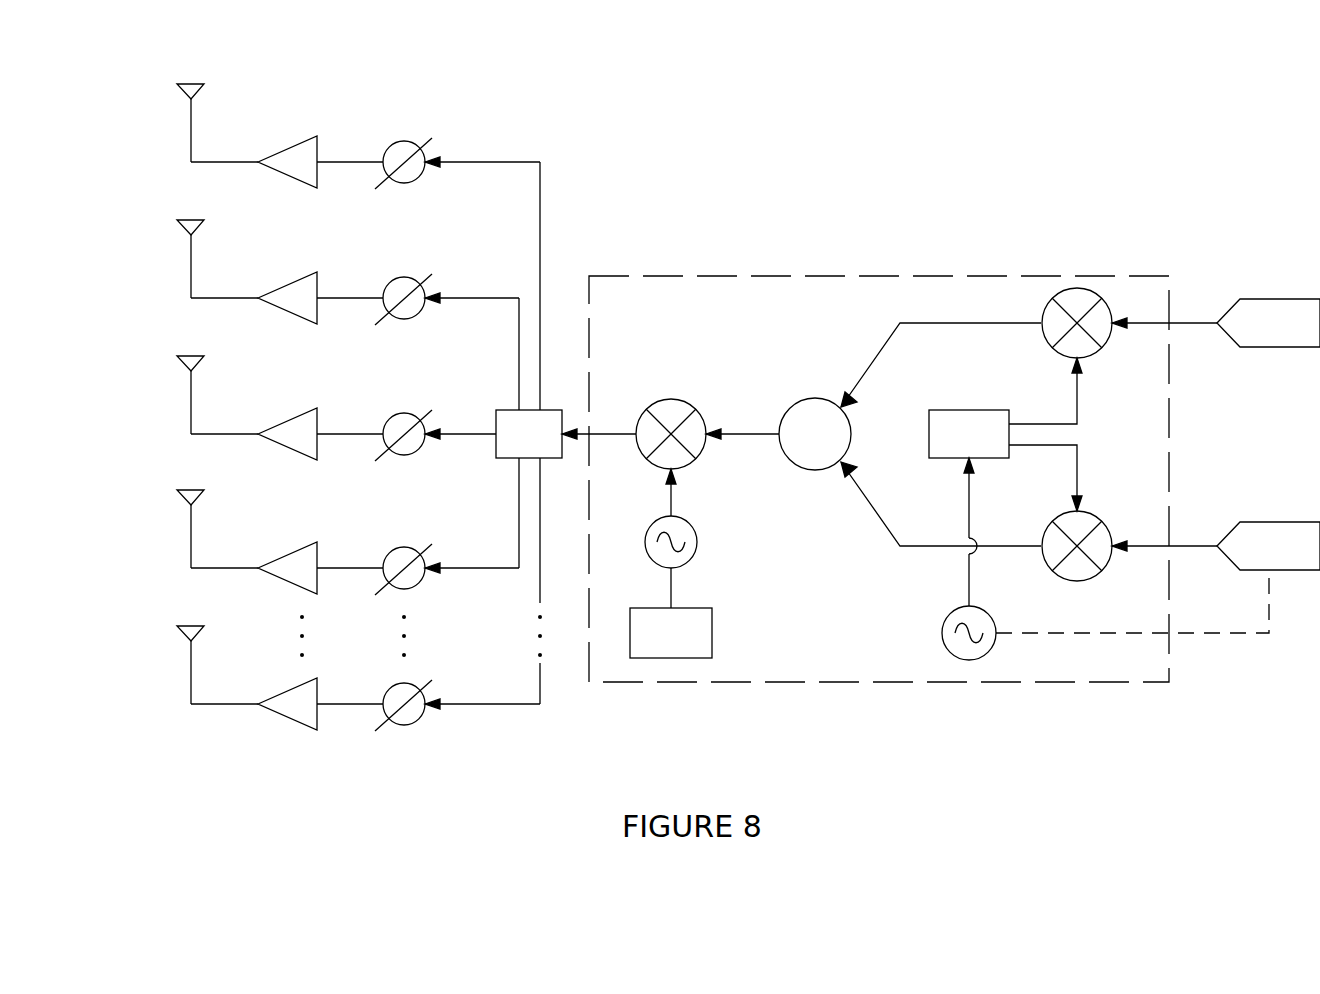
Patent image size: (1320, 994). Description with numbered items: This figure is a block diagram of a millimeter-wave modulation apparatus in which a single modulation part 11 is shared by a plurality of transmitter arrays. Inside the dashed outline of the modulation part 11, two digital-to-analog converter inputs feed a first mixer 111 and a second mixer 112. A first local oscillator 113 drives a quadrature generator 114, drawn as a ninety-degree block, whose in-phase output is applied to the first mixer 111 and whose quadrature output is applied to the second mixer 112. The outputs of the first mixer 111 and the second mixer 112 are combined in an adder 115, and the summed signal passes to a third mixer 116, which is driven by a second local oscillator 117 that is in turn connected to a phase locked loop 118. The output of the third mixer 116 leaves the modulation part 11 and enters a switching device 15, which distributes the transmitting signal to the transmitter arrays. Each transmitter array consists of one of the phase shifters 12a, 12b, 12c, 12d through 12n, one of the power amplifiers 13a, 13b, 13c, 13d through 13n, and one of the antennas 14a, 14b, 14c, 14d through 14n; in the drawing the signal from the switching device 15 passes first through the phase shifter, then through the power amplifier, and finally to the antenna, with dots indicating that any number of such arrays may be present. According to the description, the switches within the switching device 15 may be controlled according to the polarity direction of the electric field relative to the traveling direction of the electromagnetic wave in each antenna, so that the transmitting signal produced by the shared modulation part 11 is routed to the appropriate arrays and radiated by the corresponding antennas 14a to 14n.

The modulation part 11 is at (940, 276).
The phase shifter 12a is at (402, 142).
The phase shifter 12b is at (402, 278).
The phase shifter 12c is at (402, 414).
The phase shifter 12d is at (402, 548).
The phase shifter 12n is at (403, 725).
The power amplifier 13a is at (290, 148).
The power amplifier 13b is at (290, 284).
The power amplifier 13c is at (290, 420).
The power amplifier 13d is at (290, 554).
The power amplifier 13n is at (288, 717).
The antenna 14a is at (176, 99).
The antenna 14b is at (176, 235).
The antenna 14c is at (176, 371).
The antenna 14d is at (176, 505).
The antenna 14n is at (176, 641).
The switching device 15 is at (568, 408).
The first mixer 111 is at (1077, 288).
The second mixer 112 is at (1093, 515).
The first local oscillator 113 is at (969, 660).
The quadrature generator 114 is at (970, 410).
The adder 115 is at (815, 398).
The third mixer 116 is at (671, 398).
The second local oscillator 117 is at (697, 542).
The phase locked loop 118 is at (668, 658).